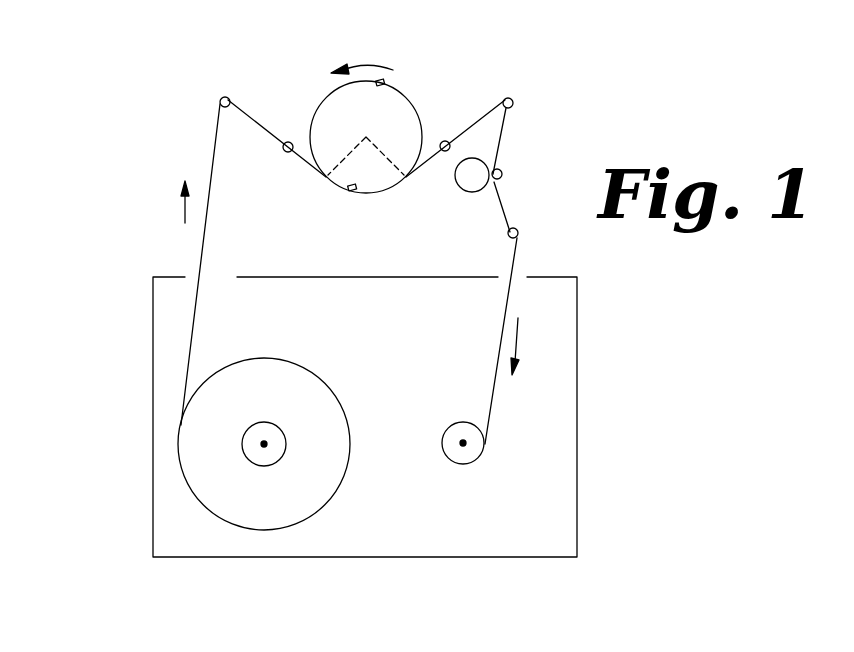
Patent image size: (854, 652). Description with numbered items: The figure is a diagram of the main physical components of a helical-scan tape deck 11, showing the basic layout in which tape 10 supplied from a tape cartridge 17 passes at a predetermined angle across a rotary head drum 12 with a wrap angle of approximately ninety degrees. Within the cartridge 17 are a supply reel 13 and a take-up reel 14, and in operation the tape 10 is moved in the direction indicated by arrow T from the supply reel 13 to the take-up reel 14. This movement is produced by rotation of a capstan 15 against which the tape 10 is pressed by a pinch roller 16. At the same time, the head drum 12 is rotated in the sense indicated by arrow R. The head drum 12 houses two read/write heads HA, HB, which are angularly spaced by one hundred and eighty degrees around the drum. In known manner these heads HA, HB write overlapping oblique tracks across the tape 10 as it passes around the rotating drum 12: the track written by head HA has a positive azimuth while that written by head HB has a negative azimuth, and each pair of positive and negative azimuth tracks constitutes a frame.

The tape 10 is at (210, 157).
The helical-scan tape deck 11 is at (124, 259).
The rotary head drum 12 is at (322, 102).
The supply reel 13 is at (344, 473).
The take-up reel 14 is at (463, 466).
The capstan 15 is at (501, 176).
The pinch roller 16 is at (458, 179).
The tape cartridge 17 is at (152, 417).
The read/write head HA is at (355, 192).
The read/write head HB is at (386, 81).
The arrow indicating head drum rotation R is at (362, 52).
The arrow indicating tape direction T is at (173, 202).